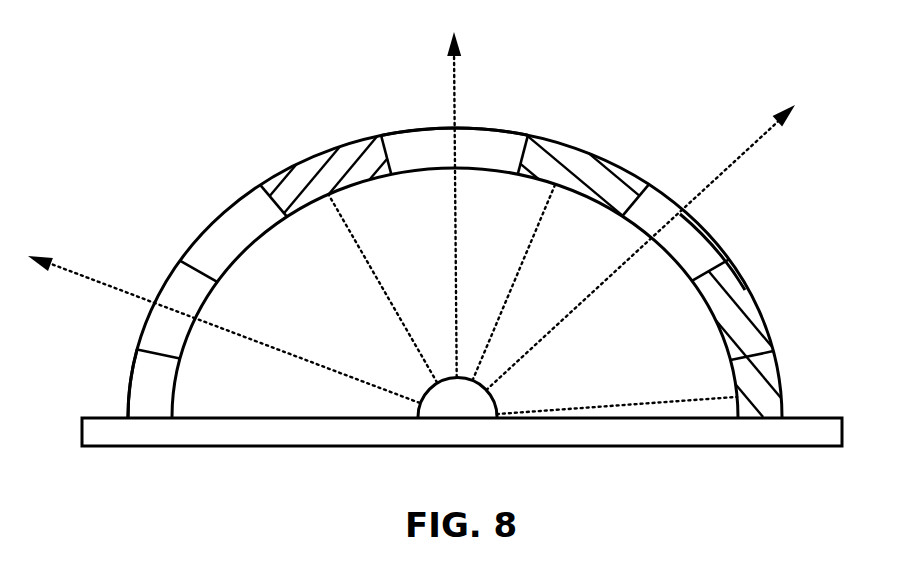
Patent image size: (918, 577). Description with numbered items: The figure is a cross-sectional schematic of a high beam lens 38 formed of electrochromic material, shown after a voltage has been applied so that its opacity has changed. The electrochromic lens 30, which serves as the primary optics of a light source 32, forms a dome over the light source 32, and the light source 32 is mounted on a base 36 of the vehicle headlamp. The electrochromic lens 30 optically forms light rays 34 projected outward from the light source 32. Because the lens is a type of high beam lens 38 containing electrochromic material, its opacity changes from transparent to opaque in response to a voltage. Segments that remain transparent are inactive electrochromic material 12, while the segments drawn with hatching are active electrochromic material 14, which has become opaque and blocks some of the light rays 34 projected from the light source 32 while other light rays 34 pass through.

The inactive electrochromic material 12 is at (428, 147).
The active electrochromic material 14 is at (332, 168).
The electrochromic lens 30 is at (200, 194).
The light source 32 is at (488, 413).
The light rays 34 is at (107, 281).
The base 36 is at (219, 447).
The high beam lens 38 is at (715, 240).